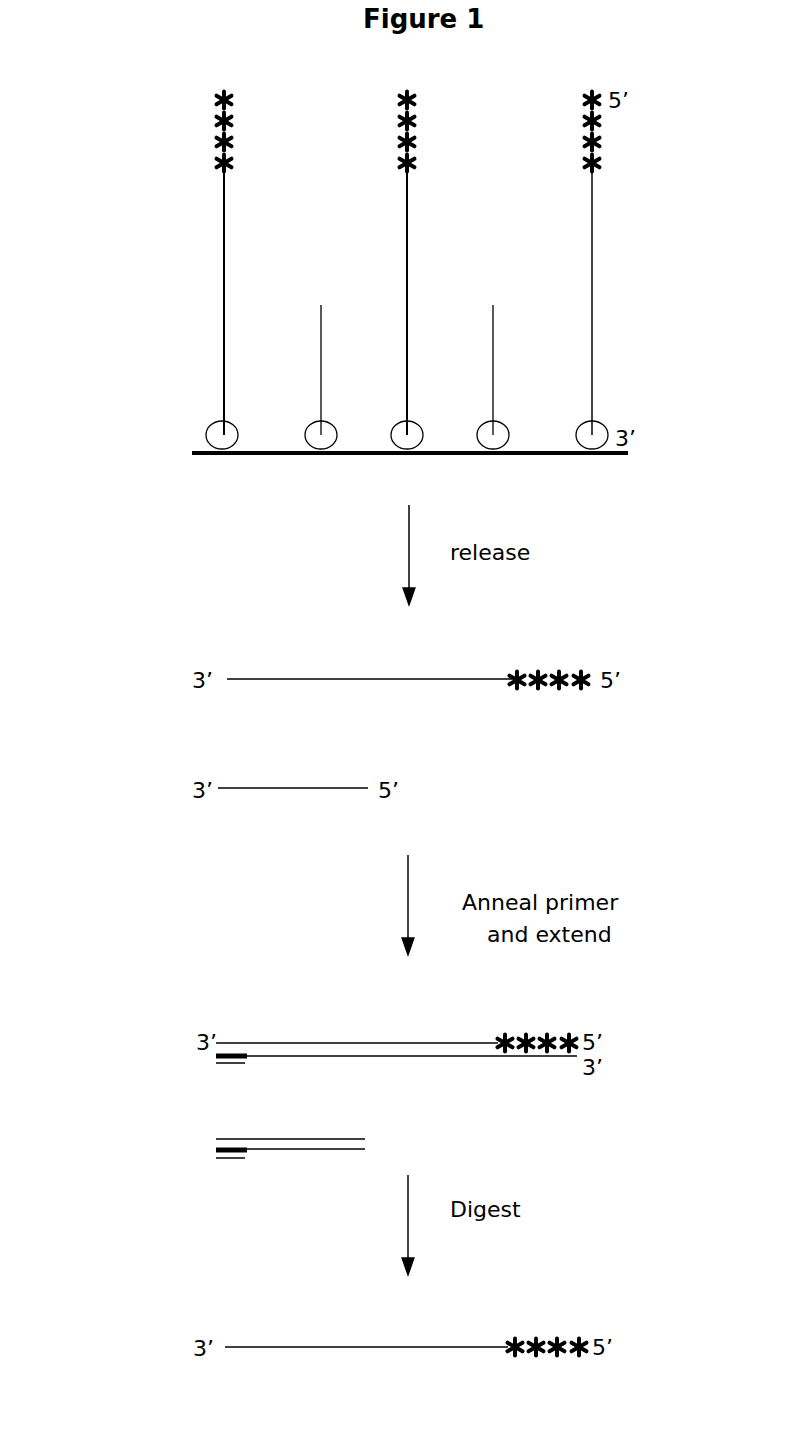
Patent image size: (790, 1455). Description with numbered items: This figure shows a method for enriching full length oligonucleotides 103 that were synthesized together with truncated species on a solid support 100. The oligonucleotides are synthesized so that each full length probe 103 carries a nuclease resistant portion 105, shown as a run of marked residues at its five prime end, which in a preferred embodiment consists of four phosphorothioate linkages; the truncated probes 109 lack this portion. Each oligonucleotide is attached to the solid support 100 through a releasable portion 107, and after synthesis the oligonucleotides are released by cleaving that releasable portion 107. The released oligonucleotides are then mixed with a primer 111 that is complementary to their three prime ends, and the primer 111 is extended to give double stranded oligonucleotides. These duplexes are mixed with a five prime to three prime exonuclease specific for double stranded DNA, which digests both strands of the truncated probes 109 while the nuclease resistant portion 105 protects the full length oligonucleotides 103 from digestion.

The solid support 100 is at (260, 456).
The full length oligonucleotides 103 is at (224, 315).
The nuclease resistant portion 105 is at (197, 96).
The releasable portion 107 is at (206, 436).
The truncated probes 109 is at (494, 358).
The primer 111 is at (176, 1135).